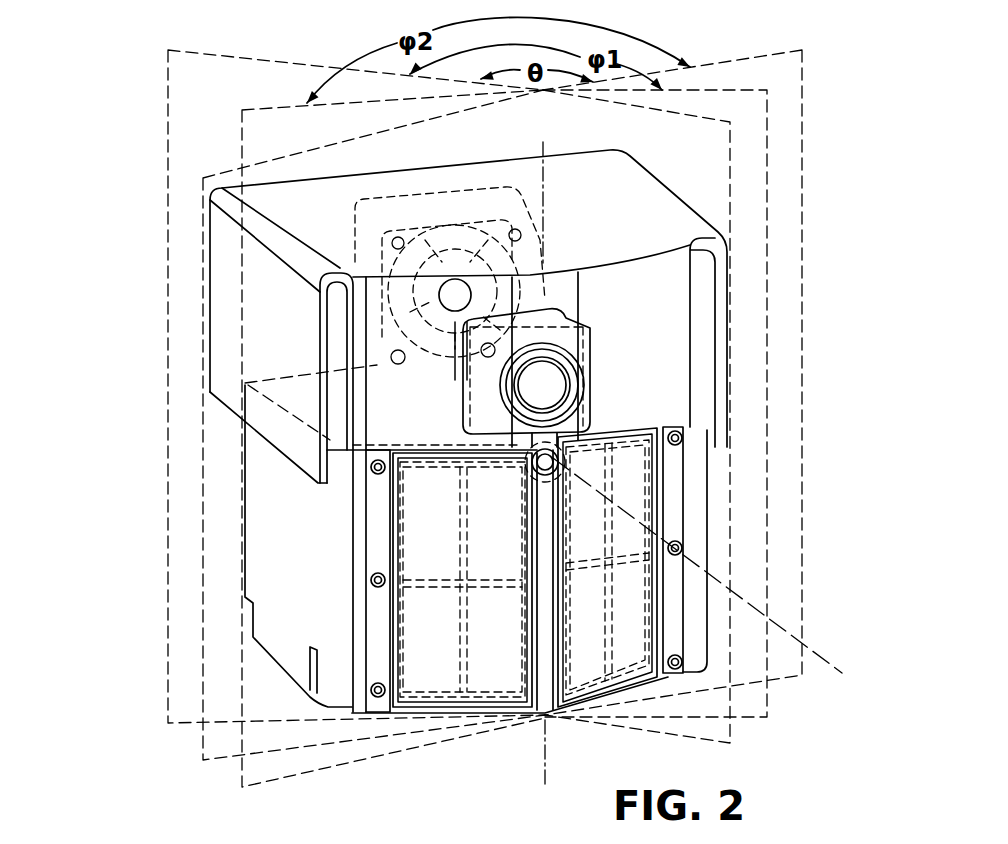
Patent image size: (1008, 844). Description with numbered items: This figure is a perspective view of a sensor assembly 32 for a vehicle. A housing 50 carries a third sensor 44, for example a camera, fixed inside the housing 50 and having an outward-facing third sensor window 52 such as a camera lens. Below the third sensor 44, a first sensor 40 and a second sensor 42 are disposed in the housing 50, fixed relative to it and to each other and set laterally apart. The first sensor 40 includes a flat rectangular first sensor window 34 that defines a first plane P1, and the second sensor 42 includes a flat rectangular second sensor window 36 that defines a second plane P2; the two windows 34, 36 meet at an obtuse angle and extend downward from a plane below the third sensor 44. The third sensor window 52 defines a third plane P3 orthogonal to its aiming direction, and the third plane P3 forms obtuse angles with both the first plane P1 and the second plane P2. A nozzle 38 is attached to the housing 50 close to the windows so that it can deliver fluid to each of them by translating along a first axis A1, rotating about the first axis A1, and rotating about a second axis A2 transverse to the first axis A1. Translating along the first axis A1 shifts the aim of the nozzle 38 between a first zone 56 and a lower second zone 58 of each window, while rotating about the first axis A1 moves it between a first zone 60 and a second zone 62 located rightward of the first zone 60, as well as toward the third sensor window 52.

The sensor assembly 32 is at (126, 200).
The first sensor window 34 is at (463, 673).
The second sensor window 36 is at (610, 660).
The nozzle 38 is at (553, 461).
The first sensor 40 is at (403, 705).
The second sensor 42 is at (637, 660).
The third sensor 44 is at (548, 348).
The housing 50 is at (270, 672).
The third sensor window 52 is at (542, 385).
The first zone 56 is at (428, 578).
The second zone 58 is at (403, 654).
The first zone 60 is at (422, 677).
The second zone 62 is at (500, 677).
The first plane P1 is at (268, 58).
The second plane P2 is at (802, 83).
The third plane P3 is at (767, 128).
The first axis A1 is at (716, 576).
The second axis A2 is at (464, 479).